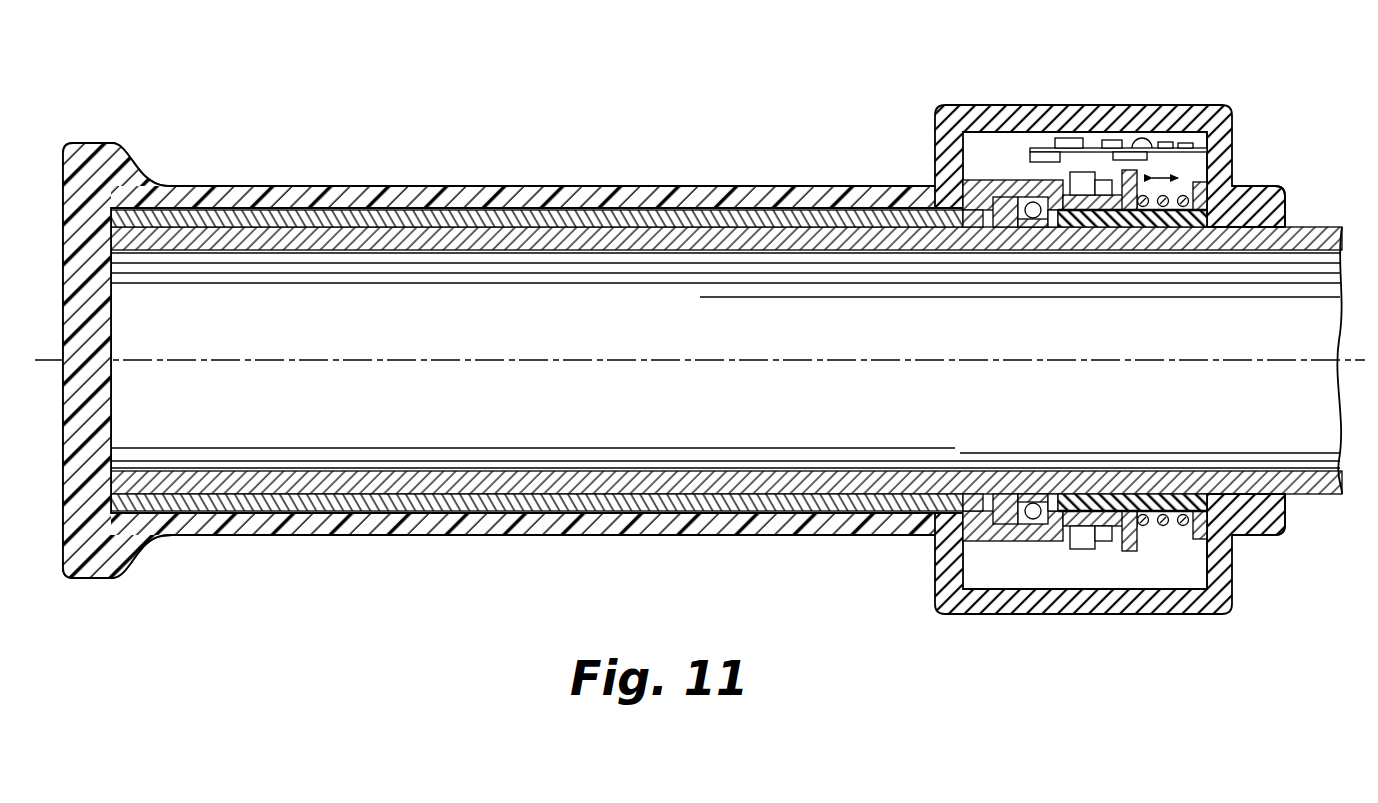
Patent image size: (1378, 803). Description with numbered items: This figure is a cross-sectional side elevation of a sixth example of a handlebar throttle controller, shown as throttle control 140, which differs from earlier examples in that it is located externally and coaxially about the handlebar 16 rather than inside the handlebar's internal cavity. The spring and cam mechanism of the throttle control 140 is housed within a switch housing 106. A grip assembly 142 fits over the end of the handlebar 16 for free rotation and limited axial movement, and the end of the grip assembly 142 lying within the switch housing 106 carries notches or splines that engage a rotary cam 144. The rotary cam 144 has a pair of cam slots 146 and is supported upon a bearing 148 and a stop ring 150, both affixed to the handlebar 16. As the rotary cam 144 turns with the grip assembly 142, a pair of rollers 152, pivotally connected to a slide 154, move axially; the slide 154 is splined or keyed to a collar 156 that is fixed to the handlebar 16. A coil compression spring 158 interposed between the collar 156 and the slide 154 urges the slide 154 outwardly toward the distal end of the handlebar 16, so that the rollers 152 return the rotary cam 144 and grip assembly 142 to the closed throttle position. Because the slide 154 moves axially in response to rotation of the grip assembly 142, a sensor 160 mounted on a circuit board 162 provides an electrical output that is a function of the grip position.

The handlebar 16 is at (1303, 497).
The switch housing 106 is at (1237, 152).
The throttle control 140 is at (910, 150).
The grip assembly 142 is at (435, 536).
The rotary cam 144 is at (982, 545).
The cam slots 146 is at (1070, 547).
The bearing 148 is at (1042, 543).
The stop ring 150 is at (998, 547).
The rollers 152 is at (1085, 550).
The slide 154 is at (1130, 548).
The collar 156 is at (1213, 545).
The coil compression spring 158 is at (1167, 540).
The sensor 160 is at (1132, 158).
The circuit board 162 is at (1152, 160).